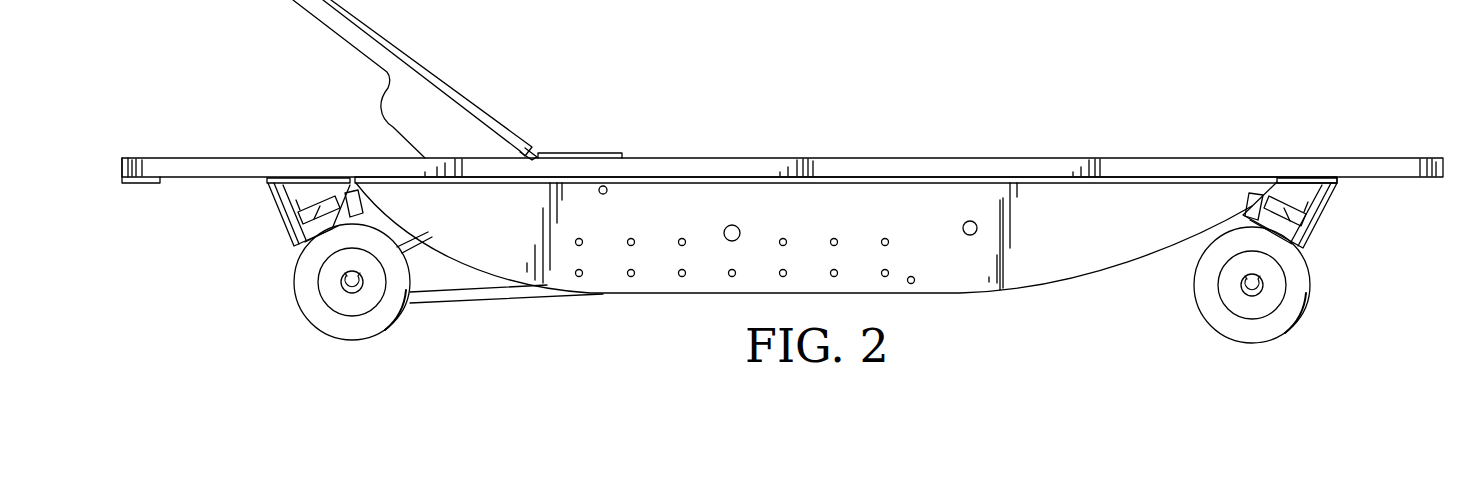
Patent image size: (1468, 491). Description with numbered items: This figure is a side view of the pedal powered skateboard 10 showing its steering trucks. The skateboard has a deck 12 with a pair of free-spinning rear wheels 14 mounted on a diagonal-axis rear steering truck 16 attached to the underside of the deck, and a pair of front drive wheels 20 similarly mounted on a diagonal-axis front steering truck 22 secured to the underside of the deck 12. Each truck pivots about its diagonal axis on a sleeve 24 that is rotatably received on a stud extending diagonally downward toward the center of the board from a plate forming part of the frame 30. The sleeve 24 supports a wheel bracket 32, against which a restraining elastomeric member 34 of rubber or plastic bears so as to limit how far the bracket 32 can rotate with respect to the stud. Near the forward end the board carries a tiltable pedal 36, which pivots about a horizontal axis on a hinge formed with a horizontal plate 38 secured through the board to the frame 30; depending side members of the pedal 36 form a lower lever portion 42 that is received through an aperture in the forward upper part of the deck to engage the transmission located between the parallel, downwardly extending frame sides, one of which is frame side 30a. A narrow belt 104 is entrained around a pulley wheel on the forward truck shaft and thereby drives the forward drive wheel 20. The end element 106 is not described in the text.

The pedal powered skateboard 10 is at (831, 156).
The deck 12 is at (727, 157).
The rear wheels 14 is at (1298, 327).
The rear steering truck 16 is at (1320, 262).
The front drive wheels 20 is at (303, 317).
The front steering truck 22 is at (265, 235).
The sleeve 24 is at (290, 222).
The frame 30 is at (1048, 283).
The frame side 30a is at (1078, 241).
The wheel bracket 32 is at (297, 217).
The restraining elastomeric member 34 is at (330, 207).
The tiltable pedal 36 is at (392, 40).
The horizontal plate 38 is at (565, 153).
The lower lever portion 42 is at (465, 133).
The narrow belt 104 is at (448, 302).
The end cap 106 is at (120, 168).